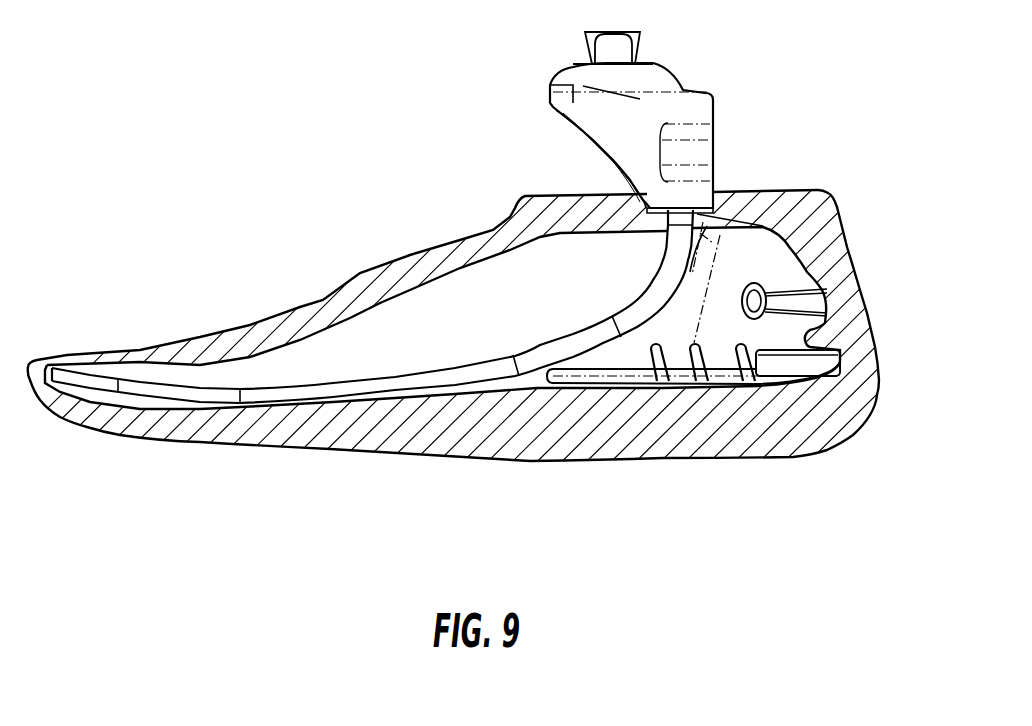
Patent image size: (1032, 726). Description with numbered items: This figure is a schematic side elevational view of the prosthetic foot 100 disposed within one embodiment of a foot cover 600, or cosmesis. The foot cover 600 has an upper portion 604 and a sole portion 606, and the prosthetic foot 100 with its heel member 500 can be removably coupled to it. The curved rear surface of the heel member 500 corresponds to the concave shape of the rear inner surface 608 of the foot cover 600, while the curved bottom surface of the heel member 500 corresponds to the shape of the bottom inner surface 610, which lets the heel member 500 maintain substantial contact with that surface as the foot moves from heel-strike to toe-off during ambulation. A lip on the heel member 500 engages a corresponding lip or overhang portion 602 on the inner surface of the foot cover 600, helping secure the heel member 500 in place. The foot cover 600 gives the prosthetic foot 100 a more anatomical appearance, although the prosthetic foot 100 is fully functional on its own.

The prosthetic foot 100 is at (725, 145).
The heel member 500 is at (763, 267).
The foot cover 600 is at (198, 298).
The lip or overhang portion 602 is at (824, 340).
The upper portion 604 is at (427, 250).
The sole portion 606 is at (535, 468).
The rear inner surface 608 is at (808, 254).
The bottom inner surface 610 is at (662, 390).